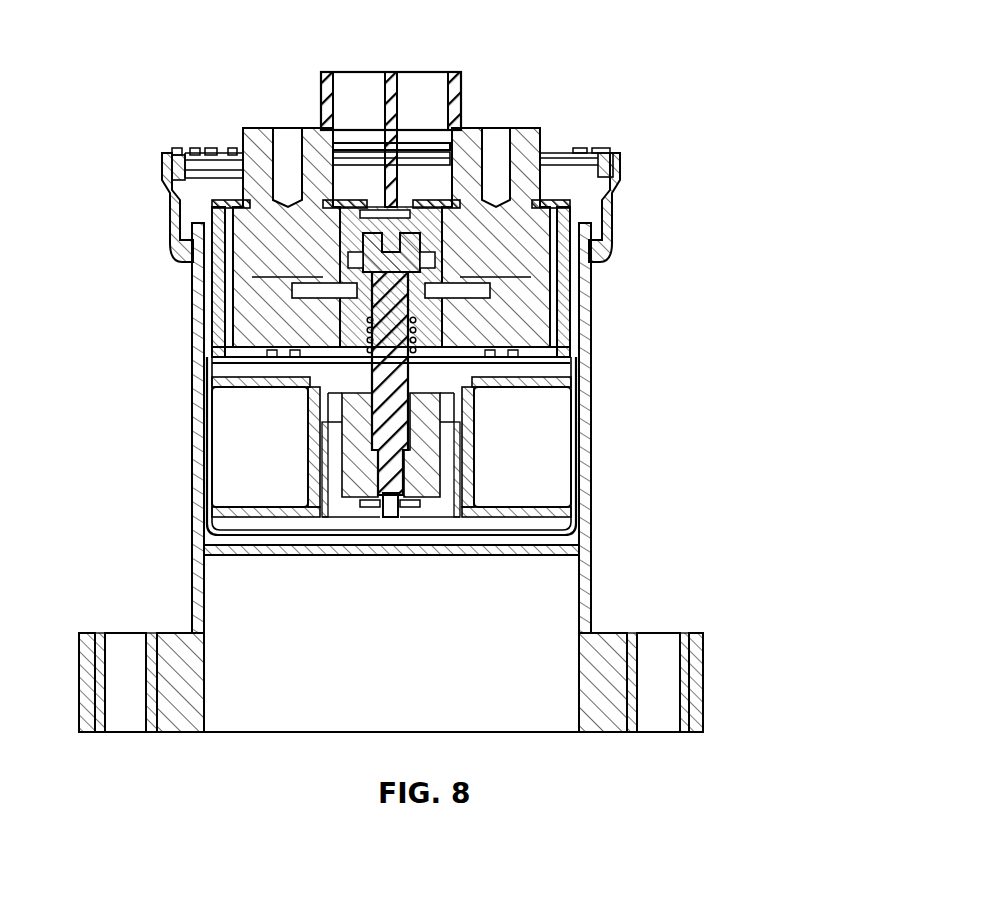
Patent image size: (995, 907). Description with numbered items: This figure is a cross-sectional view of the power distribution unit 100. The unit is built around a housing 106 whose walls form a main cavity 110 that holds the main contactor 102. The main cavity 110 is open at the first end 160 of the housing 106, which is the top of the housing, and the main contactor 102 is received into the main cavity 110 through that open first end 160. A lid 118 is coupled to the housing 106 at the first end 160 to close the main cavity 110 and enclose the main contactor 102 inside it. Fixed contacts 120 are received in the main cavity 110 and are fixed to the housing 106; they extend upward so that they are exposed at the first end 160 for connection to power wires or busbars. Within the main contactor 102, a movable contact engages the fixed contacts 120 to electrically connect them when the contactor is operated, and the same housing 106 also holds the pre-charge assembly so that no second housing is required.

The power distribution unit 100 is at (400, 382).
The lid 118 is at (582, 148).
The first end 160 is at (613, 157).
The main cavity 110 is at (580, 237).
The fixed contacts 120 is at (277, 237).
The main contactor 102 is at (548, 310).
The housing 106 is at (593, 542).